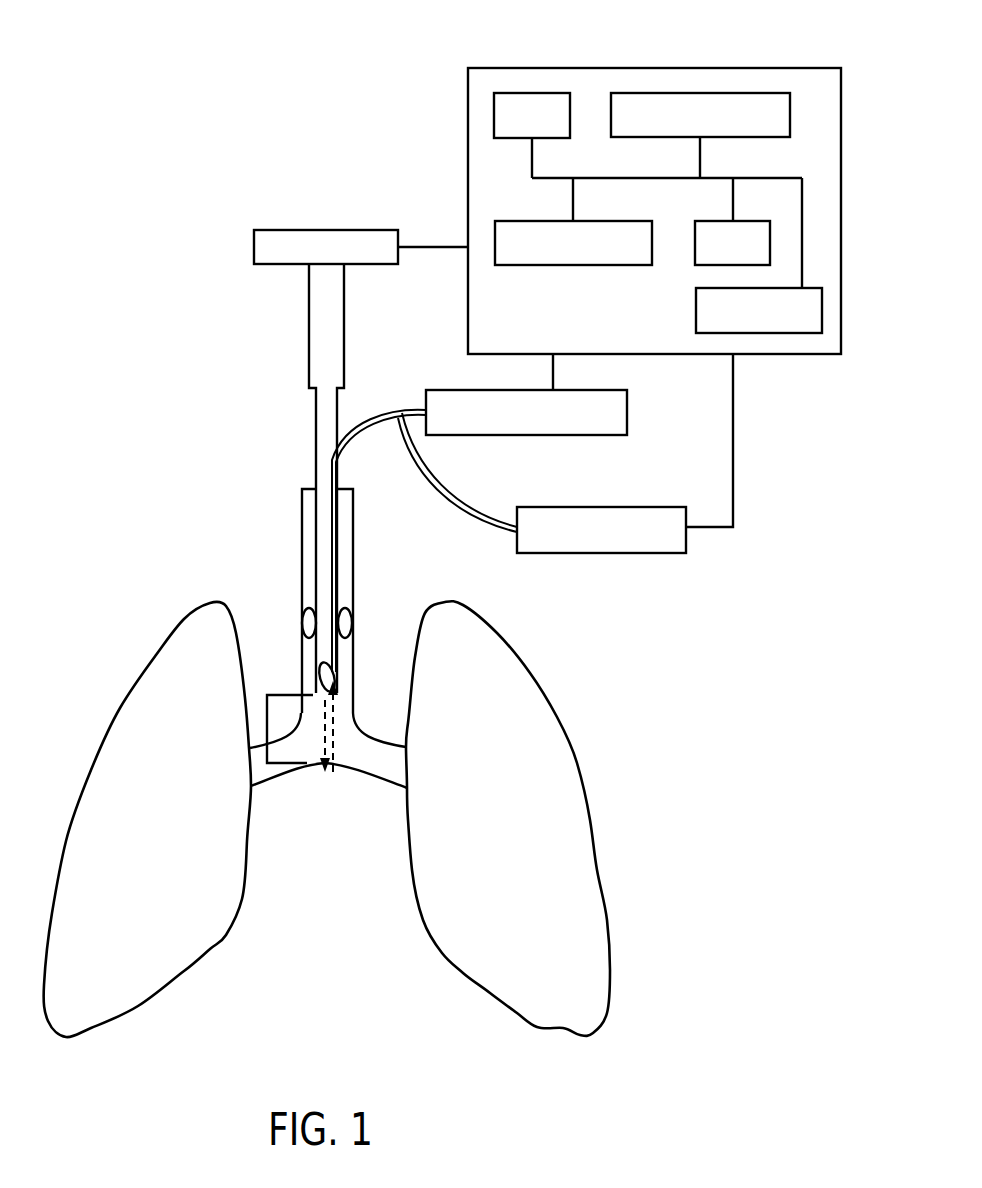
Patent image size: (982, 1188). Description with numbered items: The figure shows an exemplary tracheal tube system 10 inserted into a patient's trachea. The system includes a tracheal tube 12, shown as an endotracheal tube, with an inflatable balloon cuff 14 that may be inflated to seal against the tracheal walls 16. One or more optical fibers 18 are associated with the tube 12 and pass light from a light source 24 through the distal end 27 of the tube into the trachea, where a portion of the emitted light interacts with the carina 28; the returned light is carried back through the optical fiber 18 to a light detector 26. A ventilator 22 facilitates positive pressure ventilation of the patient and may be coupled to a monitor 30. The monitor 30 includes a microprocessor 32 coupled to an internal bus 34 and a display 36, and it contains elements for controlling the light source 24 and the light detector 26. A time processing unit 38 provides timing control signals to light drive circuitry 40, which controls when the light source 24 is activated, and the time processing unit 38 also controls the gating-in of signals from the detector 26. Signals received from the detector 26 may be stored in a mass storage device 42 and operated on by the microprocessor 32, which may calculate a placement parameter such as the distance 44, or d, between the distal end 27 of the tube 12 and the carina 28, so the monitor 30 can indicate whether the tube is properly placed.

The tracheal tube system 10 is at (130, 53).
The tracheal tube 12 is at (327, 489).
The inflatable balloon cuff 14 is at (349, 608).
The tracheal walls 16 is at (301, 521).
The optical fibers 18 is at (385, 413).
The ventilator 22 is at (327, 229).
The light source 24 is at (602, 554).
The light detector 26 is at (533, 436).
The distal end 27 is at (335, 677).
The carina 28 is at (325, 796).
The monitor 30 is at (655, 68).
The microprocessor 32 is at (571, 127).
The internal bus 34 is at (532, 160).
The display 36 is at (696, 310).
The time processing unit 38 is at (725, 221).
The light drive circuitry 40 is at (575, 266).
The mass storage device 42 is at (677, 138).
The distance 44 is at (260, 717).